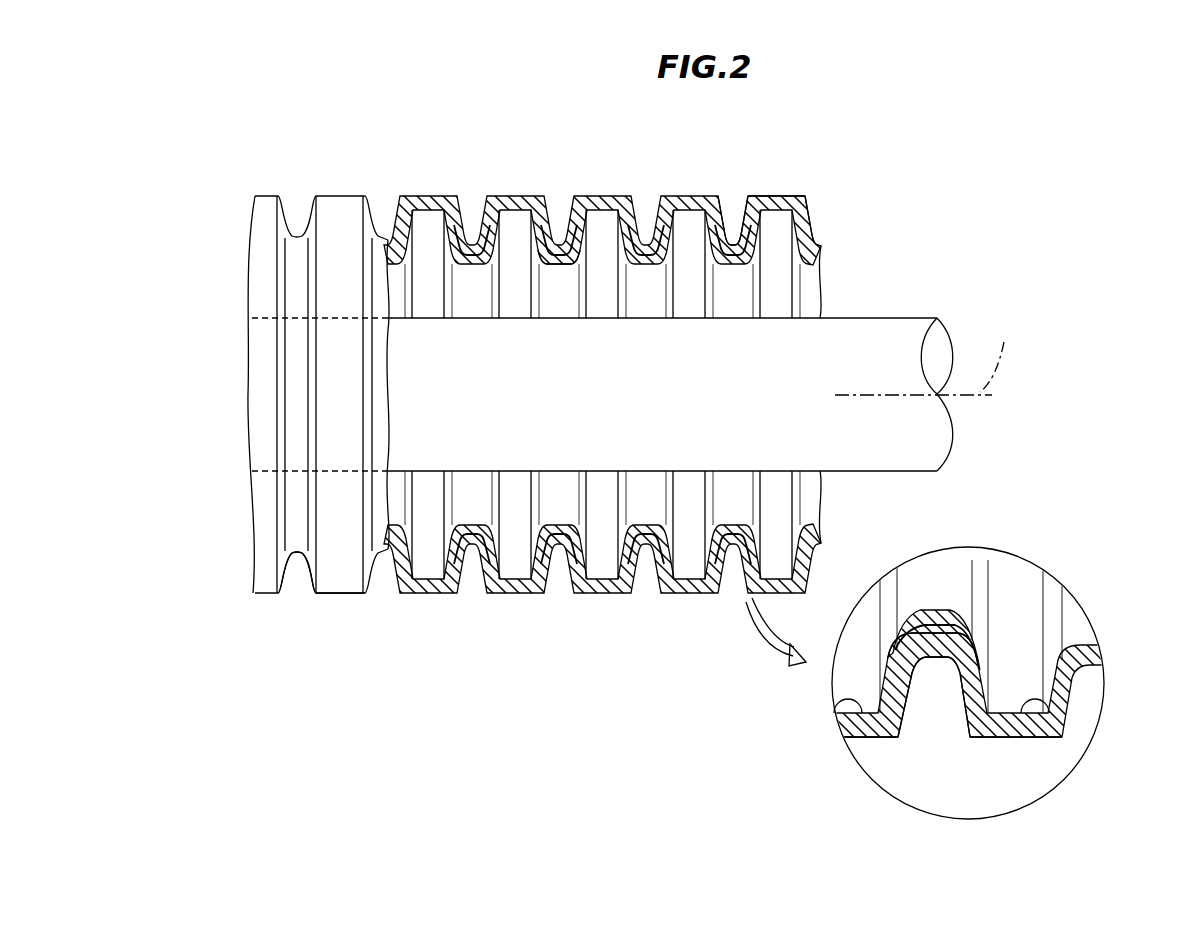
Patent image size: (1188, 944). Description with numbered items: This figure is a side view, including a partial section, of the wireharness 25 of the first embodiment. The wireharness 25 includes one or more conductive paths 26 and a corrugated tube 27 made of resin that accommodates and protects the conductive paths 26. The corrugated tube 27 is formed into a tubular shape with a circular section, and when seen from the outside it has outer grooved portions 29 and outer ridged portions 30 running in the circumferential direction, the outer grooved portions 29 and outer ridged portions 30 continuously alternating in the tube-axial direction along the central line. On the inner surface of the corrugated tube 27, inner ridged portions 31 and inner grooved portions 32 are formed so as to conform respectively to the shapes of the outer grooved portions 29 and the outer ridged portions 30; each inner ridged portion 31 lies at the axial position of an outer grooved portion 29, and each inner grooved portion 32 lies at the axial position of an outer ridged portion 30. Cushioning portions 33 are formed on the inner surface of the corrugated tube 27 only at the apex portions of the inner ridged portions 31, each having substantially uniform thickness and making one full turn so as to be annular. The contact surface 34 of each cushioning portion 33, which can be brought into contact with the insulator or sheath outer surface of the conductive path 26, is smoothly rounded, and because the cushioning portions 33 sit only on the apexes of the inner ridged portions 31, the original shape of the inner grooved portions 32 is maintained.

The wireharness 25 is at (948, 206).
The conductive path 26 is at (912, 432).
The corrugated tube 27 is at (340, 193).
The outer grooved portion 29 is at (733, 218).
The outer ridged portion 30 is at (776, 195).
The inner ridged portion 31 is at (730, 263).
The inner grooved portion 32 is at (800, 222).
The cushioning portion 33 is at (752, 258).
The contact surface 34 is at (730, 265).